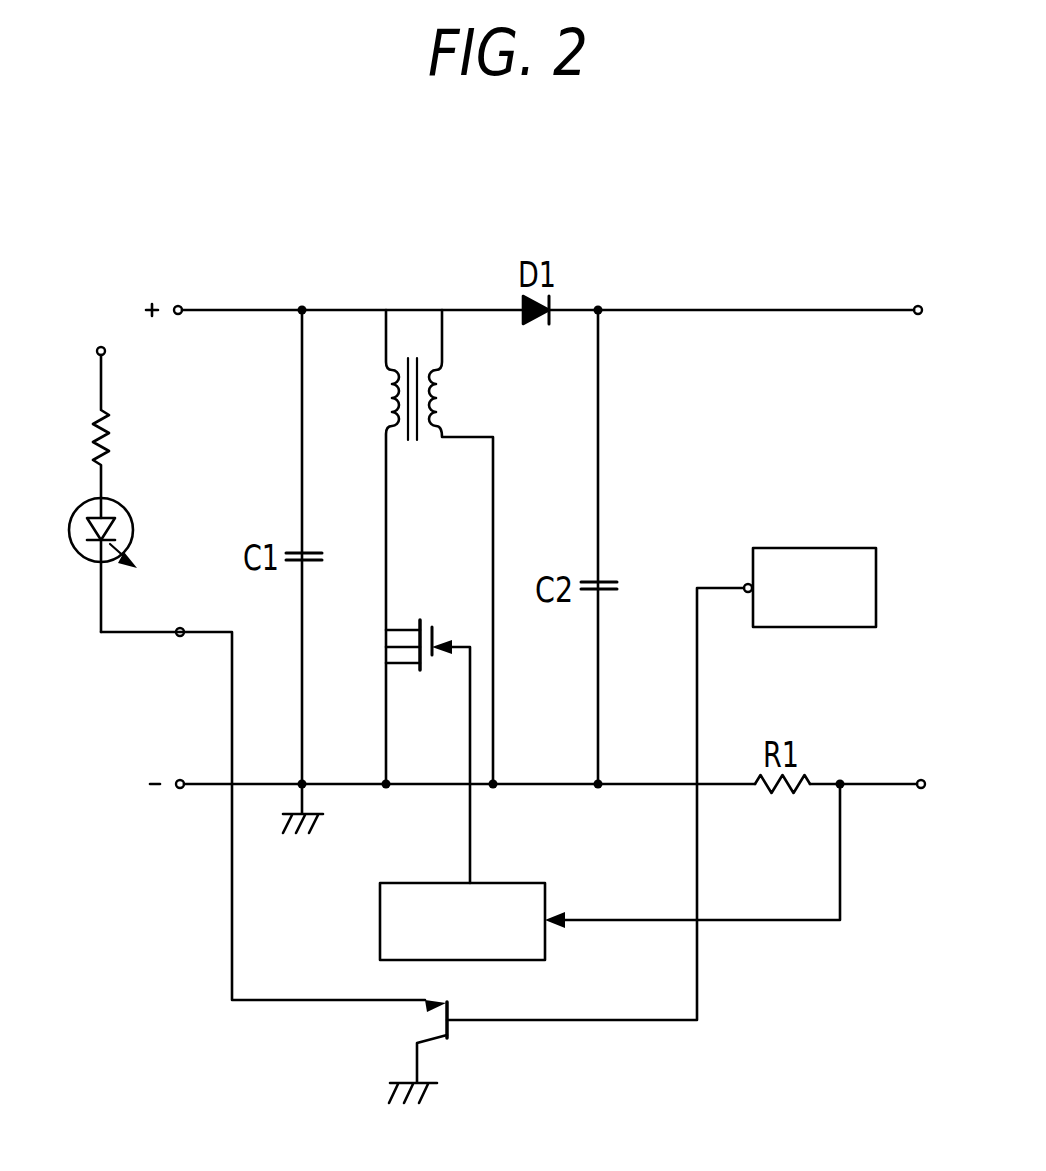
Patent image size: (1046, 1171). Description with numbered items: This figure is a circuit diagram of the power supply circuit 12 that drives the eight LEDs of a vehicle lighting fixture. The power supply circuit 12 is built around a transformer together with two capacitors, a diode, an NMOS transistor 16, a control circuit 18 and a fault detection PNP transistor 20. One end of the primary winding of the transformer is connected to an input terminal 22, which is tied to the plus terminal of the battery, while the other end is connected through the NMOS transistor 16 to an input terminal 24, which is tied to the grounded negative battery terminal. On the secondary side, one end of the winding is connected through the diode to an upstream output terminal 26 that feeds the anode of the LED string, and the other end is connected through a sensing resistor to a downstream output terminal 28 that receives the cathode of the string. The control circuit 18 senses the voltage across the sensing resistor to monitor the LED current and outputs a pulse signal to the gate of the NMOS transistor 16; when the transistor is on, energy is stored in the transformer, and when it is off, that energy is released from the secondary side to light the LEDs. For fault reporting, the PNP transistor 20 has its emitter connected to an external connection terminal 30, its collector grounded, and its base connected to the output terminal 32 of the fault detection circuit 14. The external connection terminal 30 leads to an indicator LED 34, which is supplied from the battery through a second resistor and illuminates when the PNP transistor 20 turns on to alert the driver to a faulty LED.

The power supply circuit 12 is at (383, 248).
The fault detection circuit 14 is at (775, 547).
The NMOS transistor 16 is at (427, 620).
The control circuit 18 is at (500, 883).
The fault detection PNP transistor 20 is at (450, 1036).
The input terminal 22 is at (183, 306).
The input terminal 24 is at (178, 789).
The output terminal 26 is at (915, 305).
The output terminal 28 is at (922, 789).
The external connection terminal 30 is at (179, 637).
The output terminal 32 is at (745, 585).
The LED 34 is at (90, 562).